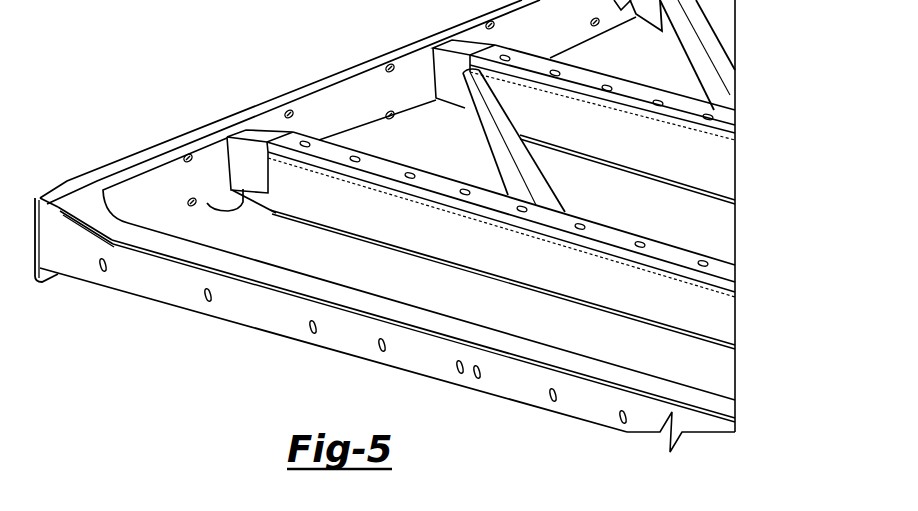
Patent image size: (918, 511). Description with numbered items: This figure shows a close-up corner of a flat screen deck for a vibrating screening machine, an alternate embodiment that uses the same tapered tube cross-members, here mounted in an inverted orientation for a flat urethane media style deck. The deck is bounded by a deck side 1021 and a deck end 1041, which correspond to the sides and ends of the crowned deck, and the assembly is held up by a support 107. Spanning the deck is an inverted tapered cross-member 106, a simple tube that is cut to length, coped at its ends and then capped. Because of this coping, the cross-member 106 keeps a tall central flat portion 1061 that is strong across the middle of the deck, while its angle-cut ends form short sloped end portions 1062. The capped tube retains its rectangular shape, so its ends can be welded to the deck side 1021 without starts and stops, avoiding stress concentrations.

The deck side 1021 is at (330, 45).
The deck end 1041 is at (520, 377).
The tubular cross-member 106 is at (520, 239).
The central flat portion 1061 is at (724, 333).
The sloped end portion 1062 is at (207, 203).
The support 107 is at (537, 166).